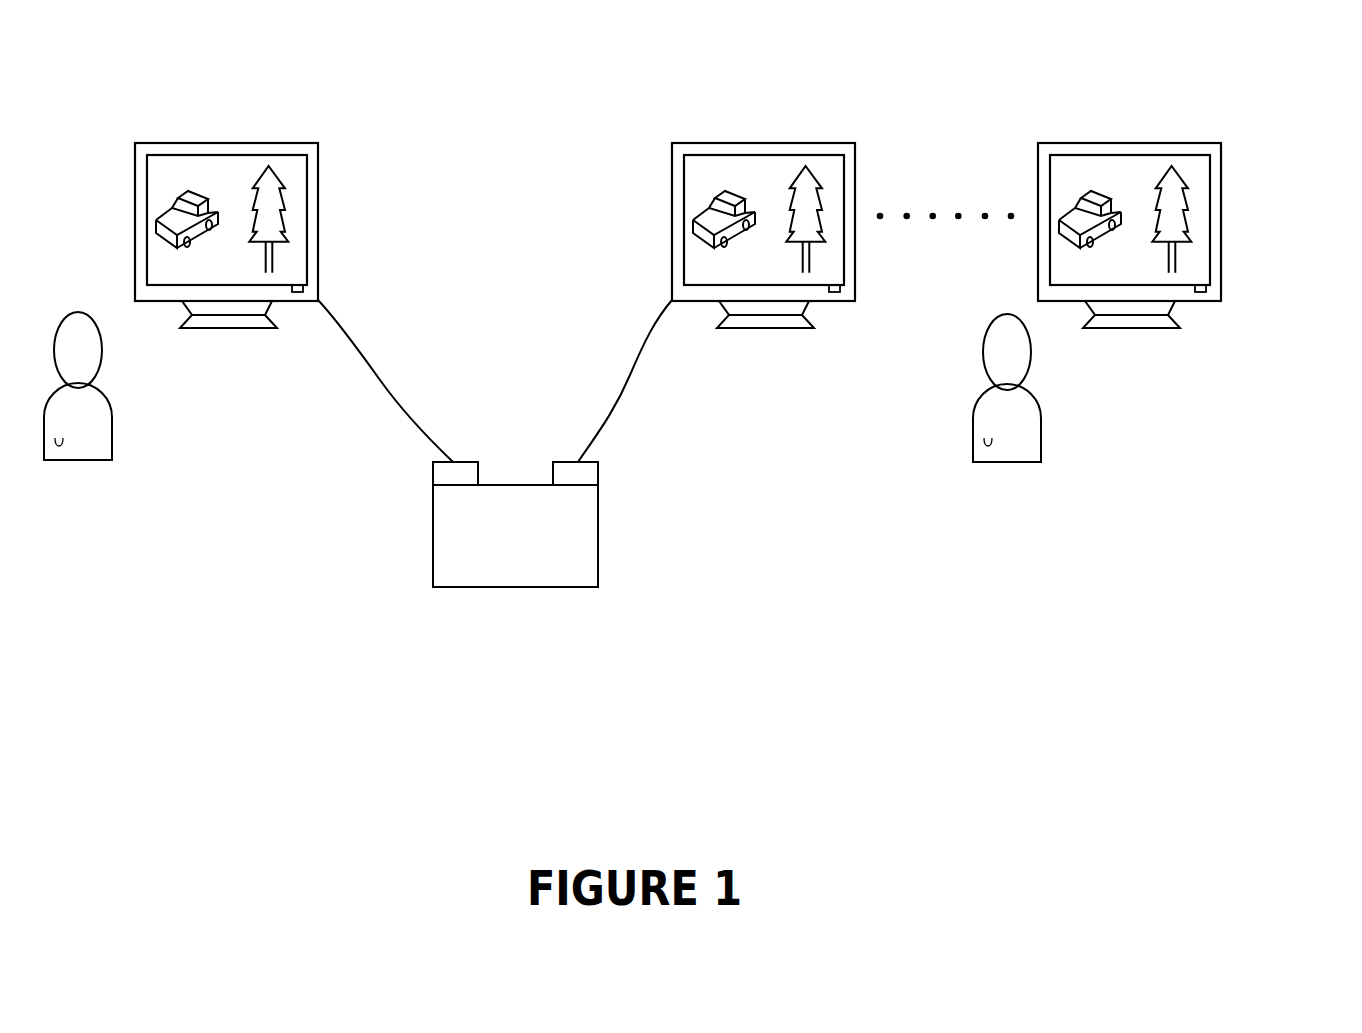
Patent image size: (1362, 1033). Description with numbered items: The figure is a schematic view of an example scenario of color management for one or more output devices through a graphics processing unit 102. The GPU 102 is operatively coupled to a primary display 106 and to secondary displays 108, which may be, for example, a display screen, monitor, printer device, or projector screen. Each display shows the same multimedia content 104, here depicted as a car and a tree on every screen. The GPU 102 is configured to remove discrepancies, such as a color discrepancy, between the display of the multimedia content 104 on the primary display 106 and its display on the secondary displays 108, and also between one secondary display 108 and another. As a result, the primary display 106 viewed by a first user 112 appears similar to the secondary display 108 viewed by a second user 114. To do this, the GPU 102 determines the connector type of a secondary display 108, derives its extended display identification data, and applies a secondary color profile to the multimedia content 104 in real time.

The graphics processing unit 102 is at (516, 587).
The multimedia content 104 is at (305, 258).
The primary display 106 is at (318, 203).
The secondary display 108 is at (855, 160).
The first user 112 is at (79, 460).
The second user 114 is at (1008, 462).